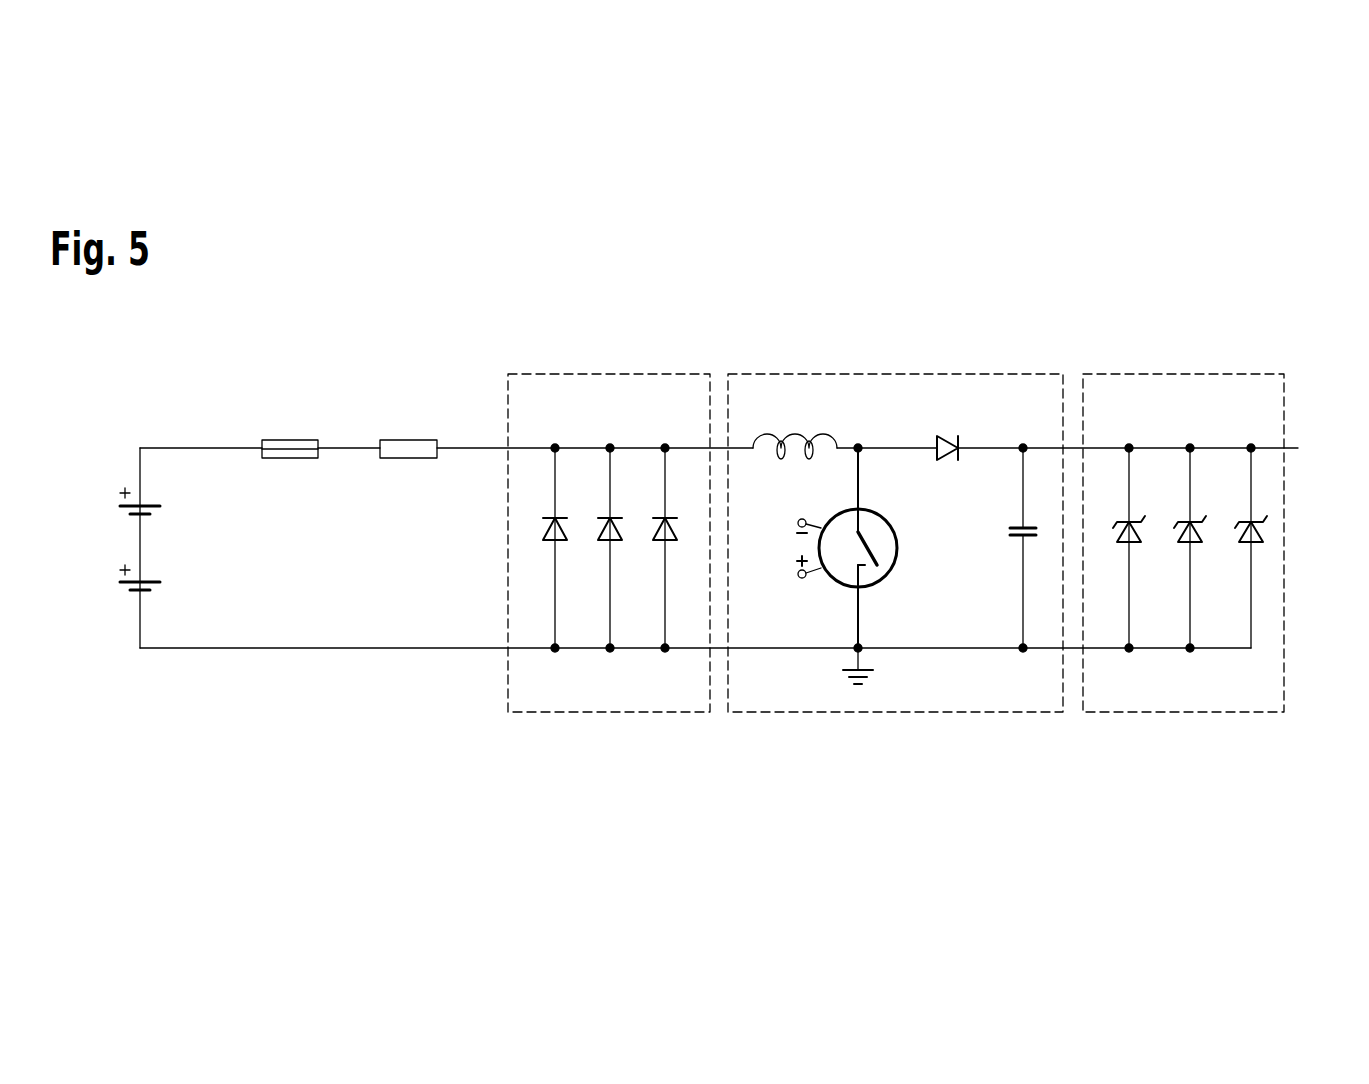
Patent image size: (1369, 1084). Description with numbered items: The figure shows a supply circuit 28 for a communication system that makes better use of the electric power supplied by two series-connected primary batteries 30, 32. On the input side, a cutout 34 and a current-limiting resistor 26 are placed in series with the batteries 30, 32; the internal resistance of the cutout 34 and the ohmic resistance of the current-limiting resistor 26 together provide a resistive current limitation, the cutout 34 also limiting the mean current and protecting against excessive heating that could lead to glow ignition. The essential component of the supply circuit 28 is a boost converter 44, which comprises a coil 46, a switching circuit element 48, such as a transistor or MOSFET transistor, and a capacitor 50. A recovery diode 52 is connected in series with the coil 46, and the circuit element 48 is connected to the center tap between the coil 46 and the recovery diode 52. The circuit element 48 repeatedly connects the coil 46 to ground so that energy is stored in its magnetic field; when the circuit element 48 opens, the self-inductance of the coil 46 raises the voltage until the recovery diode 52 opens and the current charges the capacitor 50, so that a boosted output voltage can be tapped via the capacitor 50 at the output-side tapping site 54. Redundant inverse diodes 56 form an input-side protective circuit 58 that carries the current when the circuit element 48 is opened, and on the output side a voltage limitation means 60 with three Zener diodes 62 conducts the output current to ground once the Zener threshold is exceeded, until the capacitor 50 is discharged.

The supply circuit 28 is at (289, 308).
The cutout 34 is at (268, 438).
The current-limiting resistor 26 is at (386, 438).
The battery 30 is at (120, 507).
The battery 32 is at (120, 584).
The inverse diode 56 is at (545, 519).
The input-side protective circuit 58 is at (609, 712).
The coil 46 is at (768, 432).
The recovery diode 52 is at (962, 438).
The switching circuit element 48 is at (840, 588).
The capacitor 50 is at (1010, 529).
The boost converter 44 is at (935, 712).
The output-side tapping site 54 is at (1285, 448).
The Zener diode 62 is at (1265, 523).
The voltage limitation means 60 is at (1175, 712).